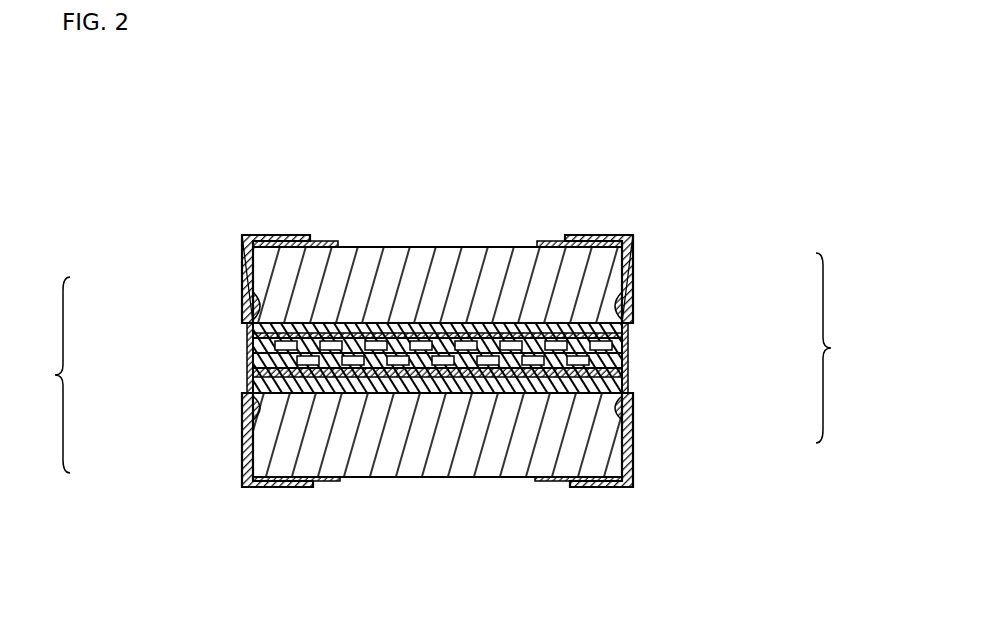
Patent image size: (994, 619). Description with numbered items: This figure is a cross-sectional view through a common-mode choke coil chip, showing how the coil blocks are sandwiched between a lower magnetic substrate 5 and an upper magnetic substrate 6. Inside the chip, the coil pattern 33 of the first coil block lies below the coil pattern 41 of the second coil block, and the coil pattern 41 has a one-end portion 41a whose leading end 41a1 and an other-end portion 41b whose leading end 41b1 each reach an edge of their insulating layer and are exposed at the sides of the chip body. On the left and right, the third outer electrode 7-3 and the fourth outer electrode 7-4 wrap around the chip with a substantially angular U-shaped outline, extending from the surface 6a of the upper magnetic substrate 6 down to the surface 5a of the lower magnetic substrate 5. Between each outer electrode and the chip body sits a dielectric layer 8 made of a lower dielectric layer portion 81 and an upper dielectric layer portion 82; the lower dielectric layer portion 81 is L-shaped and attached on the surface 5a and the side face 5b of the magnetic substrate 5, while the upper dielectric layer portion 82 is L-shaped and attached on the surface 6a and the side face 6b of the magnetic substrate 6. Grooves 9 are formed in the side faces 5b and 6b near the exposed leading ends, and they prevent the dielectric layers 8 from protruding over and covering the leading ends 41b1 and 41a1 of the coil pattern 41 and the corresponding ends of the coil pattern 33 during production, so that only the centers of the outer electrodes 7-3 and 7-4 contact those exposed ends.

The magnetic substrate 5 is at (492, 465).
The surface of the lower magnetic substrate 5a is at (428, 477).
The side face of the lower magnetic substrate 5b is at (262, 487).
The magnetic substrate 6 is at (474, 247).
The surface of the upper magnetic substrate 6a is at (401, 247).
The side face of the upper magnetic substrate 6b is at (291, 241).
The third outer electrode 7-3 is at (243, 237).
The fourth outer electrode 7-4 is at (622, 235).
The dielectric layer 8 is at (449, 363).
The lower dielectric layer portion 81 is at (243, 470).
The upper dielectric layer portion 82 is at (243, 278).
The groove 9 is at (262, 303).
The coil pattern 33 is at (253, 403).
The coil pattern 41 is at (622, 335).
The one-end portion of the coil pattern 41a is at (622, 341).
The leading end of the one-end portion 41a1 is at (622, 351).
The other-end portion of the coil pattern 41b is at (253, 326).
The leading end of the other-end portion 41b1 is at (253, 341).